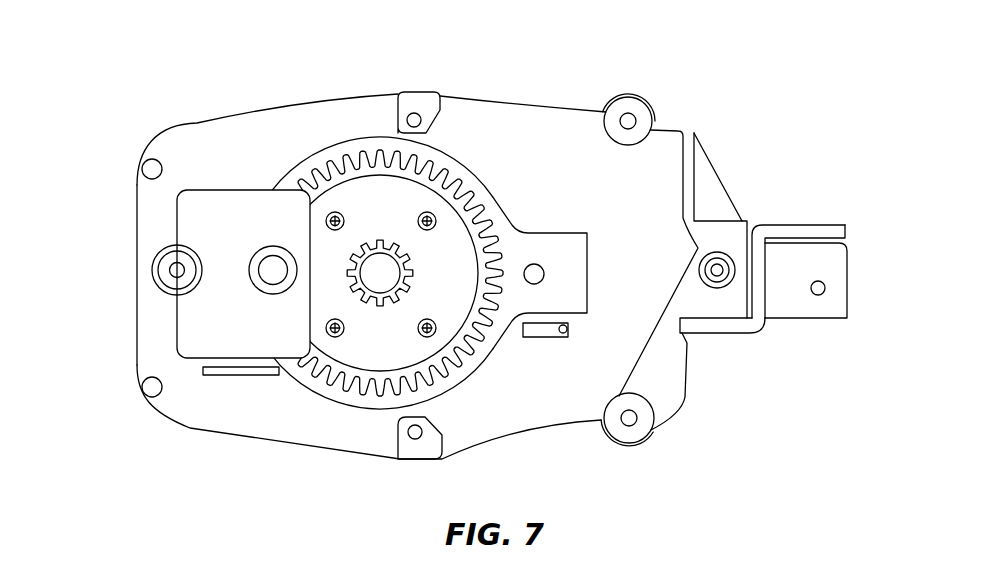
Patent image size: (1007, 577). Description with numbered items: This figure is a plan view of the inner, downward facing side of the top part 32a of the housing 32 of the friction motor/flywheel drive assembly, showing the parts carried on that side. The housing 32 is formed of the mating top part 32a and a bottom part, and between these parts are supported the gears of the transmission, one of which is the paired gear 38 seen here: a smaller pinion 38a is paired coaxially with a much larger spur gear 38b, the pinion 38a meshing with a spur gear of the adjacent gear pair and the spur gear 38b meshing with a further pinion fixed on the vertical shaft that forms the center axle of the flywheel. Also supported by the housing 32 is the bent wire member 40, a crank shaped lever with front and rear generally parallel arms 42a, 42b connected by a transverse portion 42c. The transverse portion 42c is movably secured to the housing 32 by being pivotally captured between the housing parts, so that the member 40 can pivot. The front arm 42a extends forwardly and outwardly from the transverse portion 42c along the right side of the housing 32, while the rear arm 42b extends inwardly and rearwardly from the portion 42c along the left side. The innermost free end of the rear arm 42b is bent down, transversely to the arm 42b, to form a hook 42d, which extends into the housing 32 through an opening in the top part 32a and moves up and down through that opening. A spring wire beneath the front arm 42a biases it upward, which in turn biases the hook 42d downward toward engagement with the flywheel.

The housing 32 is at (593, 82).
The top part 32a is at (137, 245).
The gear 38 is at (455, 276).
The pinion 38a is at (365, 157).
The spur gear 38b is at (397, 247).
The bent wire member 40 is at (795, 281).
The front arm 42a is at (803, 227).
The rear arm 42b is at (713, 334).
The transverse portion 42c is at (762, 286).
The hook 42d is at (563, 336).